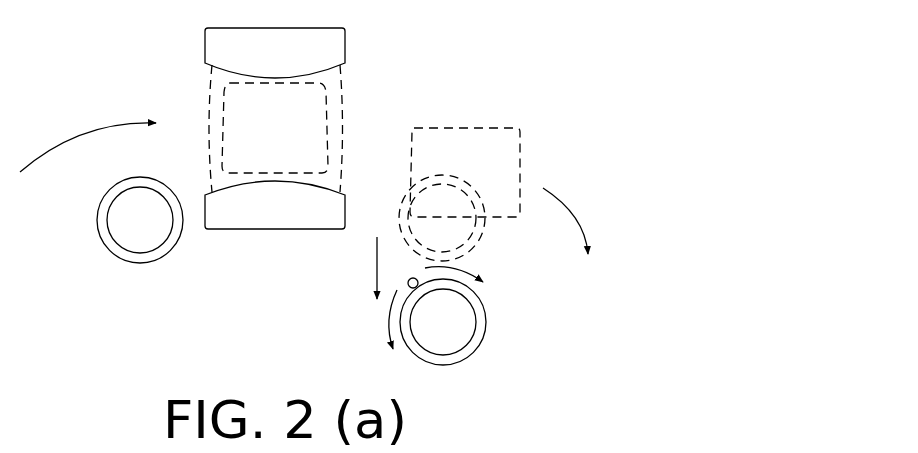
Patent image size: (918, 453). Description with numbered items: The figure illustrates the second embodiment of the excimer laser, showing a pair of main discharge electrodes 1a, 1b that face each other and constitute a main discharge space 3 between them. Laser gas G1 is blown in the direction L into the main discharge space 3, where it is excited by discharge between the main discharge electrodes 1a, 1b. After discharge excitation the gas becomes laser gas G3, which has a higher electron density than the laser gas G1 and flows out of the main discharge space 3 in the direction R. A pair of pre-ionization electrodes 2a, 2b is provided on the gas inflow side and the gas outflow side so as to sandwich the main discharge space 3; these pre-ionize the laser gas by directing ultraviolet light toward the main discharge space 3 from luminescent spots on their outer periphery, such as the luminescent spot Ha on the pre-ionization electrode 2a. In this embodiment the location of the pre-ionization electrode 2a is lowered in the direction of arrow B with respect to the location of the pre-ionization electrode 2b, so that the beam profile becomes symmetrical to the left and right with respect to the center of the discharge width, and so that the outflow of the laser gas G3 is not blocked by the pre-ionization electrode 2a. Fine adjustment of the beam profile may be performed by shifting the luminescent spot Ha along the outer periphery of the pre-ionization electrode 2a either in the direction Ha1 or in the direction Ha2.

The main discharge electrode 1a is at (317, 46).
The main discharge electrode 1b is at (272, 220).
The main discharge space 3 is at (337, 82).
The laser gas G1 is at (225, 113).
The laser gas G3 is at (482, 142).
The pre-ionization electrode 2a is at (500, 315).
The pre-ionization electrode 2b is at (106, 263).
The luminescent spot Ha is at (409, 279).
The direction Ha1 is at (477, 269).
The direction Ha2 is at (365, 322).
The arrow direction B is at (362, 268).
The direction R is at (568, 220).
The direction L is at (88, 138).